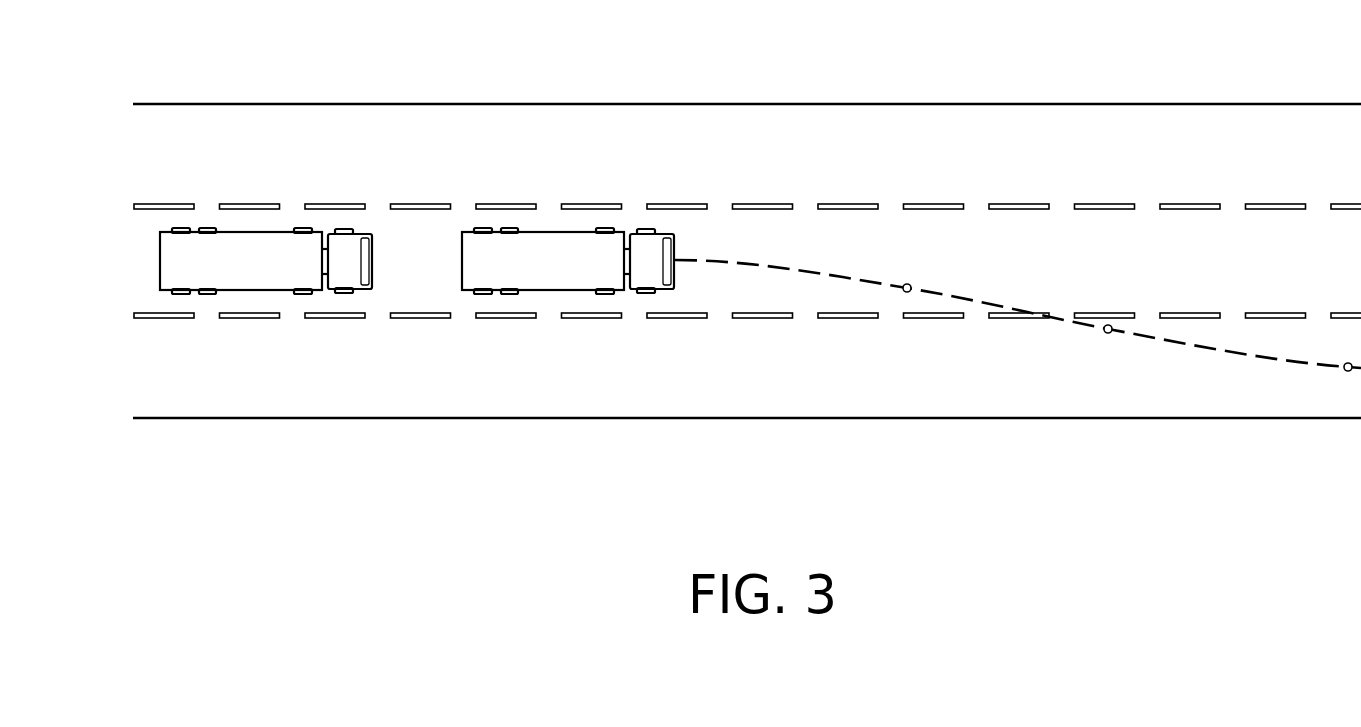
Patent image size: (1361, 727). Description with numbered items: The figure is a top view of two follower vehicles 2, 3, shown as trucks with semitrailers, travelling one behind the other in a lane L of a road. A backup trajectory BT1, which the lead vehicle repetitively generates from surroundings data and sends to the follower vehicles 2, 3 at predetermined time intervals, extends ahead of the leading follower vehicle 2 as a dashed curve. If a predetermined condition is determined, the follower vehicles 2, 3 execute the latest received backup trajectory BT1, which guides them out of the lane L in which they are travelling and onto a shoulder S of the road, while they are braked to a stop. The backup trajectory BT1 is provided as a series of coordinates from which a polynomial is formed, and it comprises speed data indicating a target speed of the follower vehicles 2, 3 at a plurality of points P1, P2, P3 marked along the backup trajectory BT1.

The follower vehicle 2 is at (560, 232).
The follower vehicle 3 is at (252, 232).
The backup trajectory BT1 is at (830, 270).
The shoulder S is at (653, 368).
The lane L is at (772, 285).
The point P1 is at (905, 293).
The point P2 is at (1107, 334).
The point P3 is at (1348, 372).